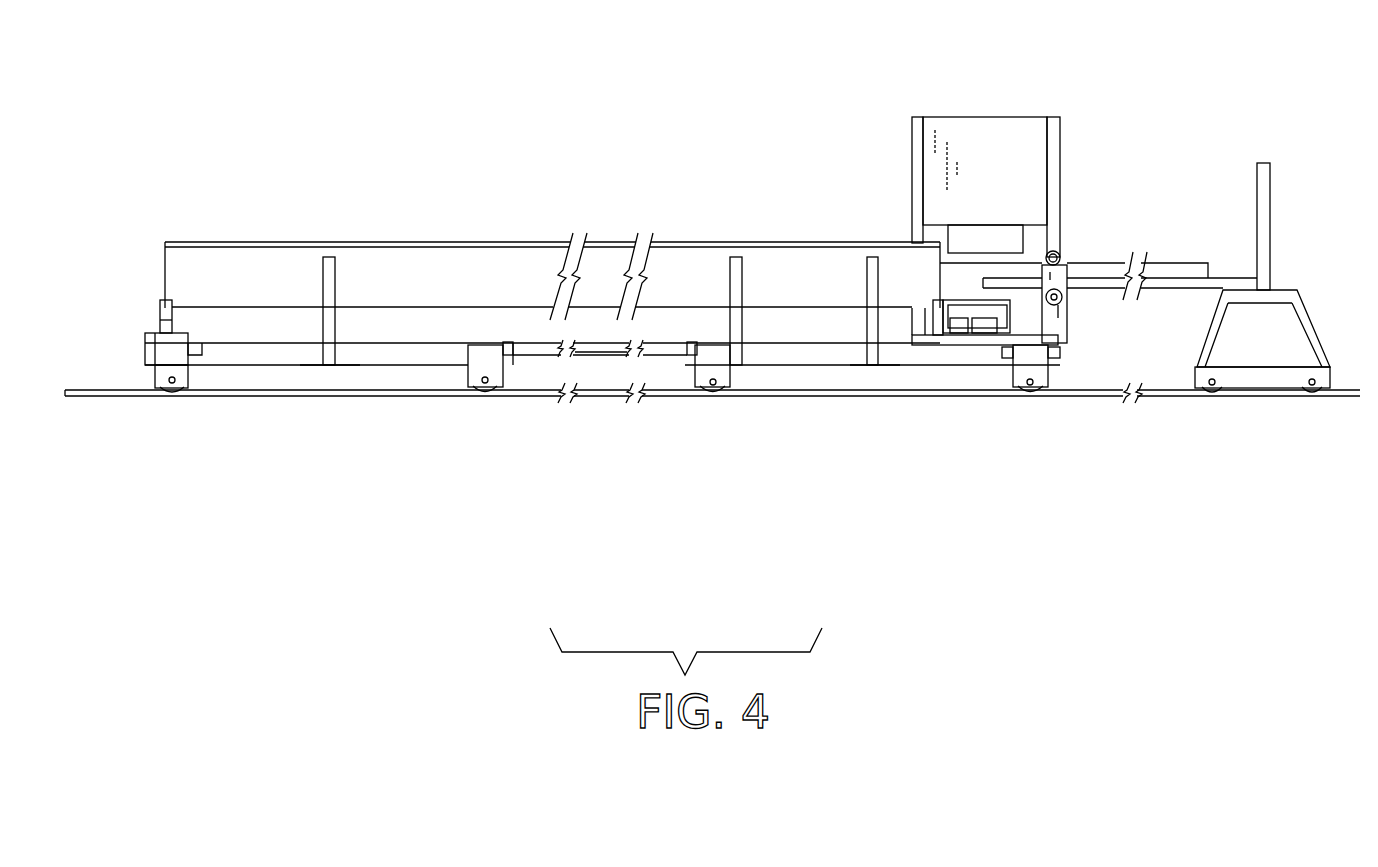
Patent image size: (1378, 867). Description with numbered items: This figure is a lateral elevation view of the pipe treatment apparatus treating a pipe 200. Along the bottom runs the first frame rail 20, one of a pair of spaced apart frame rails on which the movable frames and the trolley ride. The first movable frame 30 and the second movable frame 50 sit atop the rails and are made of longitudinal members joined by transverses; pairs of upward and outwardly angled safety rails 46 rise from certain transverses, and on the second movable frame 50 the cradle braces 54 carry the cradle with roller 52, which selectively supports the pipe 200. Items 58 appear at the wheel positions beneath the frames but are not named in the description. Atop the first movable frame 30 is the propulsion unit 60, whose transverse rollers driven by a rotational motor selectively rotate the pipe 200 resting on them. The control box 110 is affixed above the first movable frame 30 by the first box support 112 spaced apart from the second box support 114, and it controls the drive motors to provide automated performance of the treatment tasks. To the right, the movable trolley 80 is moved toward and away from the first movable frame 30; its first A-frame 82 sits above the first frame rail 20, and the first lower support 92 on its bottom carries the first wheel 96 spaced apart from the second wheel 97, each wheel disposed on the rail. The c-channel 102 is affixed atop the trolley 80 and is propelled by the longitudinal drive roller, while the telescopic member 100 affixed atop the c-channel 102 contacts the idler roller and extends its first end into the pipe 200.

The pipe 200 is at (205, 242).
The safety rails 46 is at (337, 262).
The cradle with roller 52 is at (160, 308).
The cradle braces 54 is at (148, 338).
The wheel assembly 58 is at (174, 389).
The first frame rail 20 is at (100, 397).
The second movable frame 50 is at (323, 380).
The first movable frame 30 is at (877, 382).
The control box 110 is at (960, 117).
The first box support 112 is at (912, 145).
The second box support 114 is at (1060, 143).
The propulsion unit 60 is at (1084, 316).
The telescopic member 100 is at (1178, 263).
The c-channel 102 is at (1222, 282).
The movable trolley 80 is at (1276, 307).
The first A-frame 82 is at (1316, 298).
The first lower support 92 is at (1262, 378).
The first wheel 96 is at (1212, 388).
The second wheel 97 is at (1312, 388).